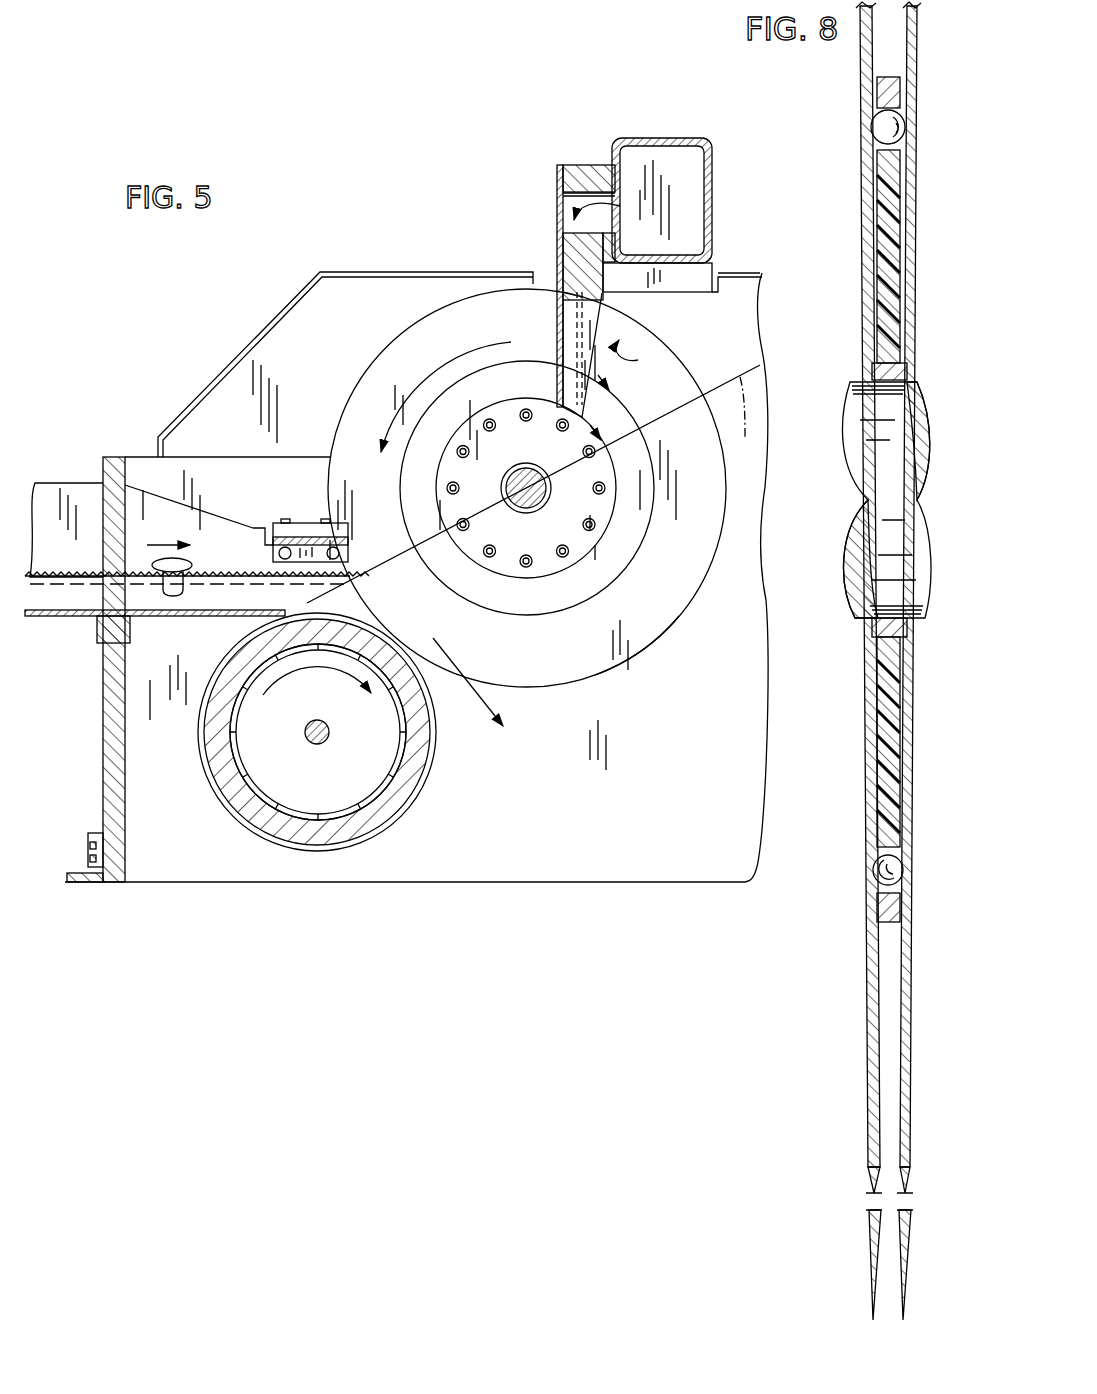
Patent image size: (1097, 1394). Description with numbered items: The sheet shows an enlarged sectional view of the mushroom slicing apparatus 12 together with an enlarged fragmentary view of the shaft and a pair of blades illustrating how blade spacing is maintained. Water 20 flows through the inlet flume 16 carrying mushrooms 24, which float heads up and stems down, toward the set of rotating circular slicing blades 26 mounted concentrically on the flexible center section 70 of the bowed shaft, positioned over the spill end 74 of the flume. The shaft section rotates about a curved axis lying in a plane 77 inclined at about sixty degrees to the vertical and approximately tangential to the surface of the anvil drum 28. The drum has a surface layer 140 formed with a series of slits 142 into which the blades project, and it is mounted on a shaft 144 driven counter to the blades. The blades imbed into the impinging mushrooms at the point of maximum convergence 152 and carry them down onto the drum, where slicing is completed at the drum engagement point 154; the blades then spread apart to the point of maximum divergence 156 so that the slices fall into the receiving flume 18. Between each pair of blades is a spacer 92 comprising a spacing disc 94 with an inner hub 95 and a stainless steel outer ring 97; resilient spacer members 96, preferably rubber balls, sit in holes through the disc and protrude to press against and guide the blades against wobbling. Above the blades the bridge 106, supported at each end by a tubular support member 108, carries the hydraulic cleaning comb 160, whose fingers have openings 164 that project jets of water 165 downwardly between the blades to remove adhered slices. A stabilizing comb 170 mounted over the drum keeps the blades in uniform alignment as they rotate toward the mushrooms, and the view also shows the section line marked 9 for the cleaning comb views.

In FIG. 5, the section line 9- 9 is at (582, 130).
In FIG. 5, the mushroom slicing apparatus 12 is at (260, 534).
In FIG. 5, the inlet flume 16 is at (82, 618).
In FIG. 5, the receiving flume 18 is at (140, 760).
In FIG. 5, the water 20 is at (63, 577).
In FIG. 5, the mushrooms 24 is at (168, 558).
In FIG. 5, the rotating circular slicing blades 26 is at (653, 650).
In FIG. 8, the rotating circular slicing blades 26 is at (861, 217).
In FIG. 5, the anvil roll or drum 28 is at (402, 823).
In FIG. 5, the center section of the shaft 70 is at (537, 505).
In FIG. 8, the center section of the shaft 70 is at (868, 470).
In FIG. 5, the spill end of the flume 74 is at (303, 599).
In FIG. 5, the plane 77 is at (741, 418).
In FIG. 5, the spacer 92 is at (536, 592).
In FIG. 8, the spacer 92 is at (891, 66).
In FIG. 8, the spacing disc 94 is at (885, 180).
In FIG. 5, the inner hub 95 is at (522, 510).
In FIG. 8, the inner hub 95 is at (873, 372).
In FIG. 5, the resilient spacer member 96 is at (569, 553).
In FIG. 8, the resilient spacer member 96 is at (874, 125).
In FIG. 8, the outer ring 97 is at (900, 88).
In FIG. 5, the tubular member or bridge 106 is at (665, 138).
In FIG. 5, the tubular support member 108 is at (712, 276).
In FIG. 5, the surface layer 140 is at (438, 735).
In FIG. 5, the slits 142 is at (431, 758).
In FIG. 5, the shaft 144 is at (317, 745).
In FIG. 5, the point of maximum convergence 152 is at (350, 580).
In FIG. 5, the drum engagement point 154 is at (397, 643).
In FIG. 5, the point of maximum divergence 156 is at (700, 397).
In FIG. 5, the hydraulic cleaning comb 160 is at (548, 238).
In FIG. 5, the openings 164 is at (603, 307).
In FIG. 5, the jets of water 165 is at (641, 357).
In FIG. 5, the stabilizing comb 170 is at (308, 514).